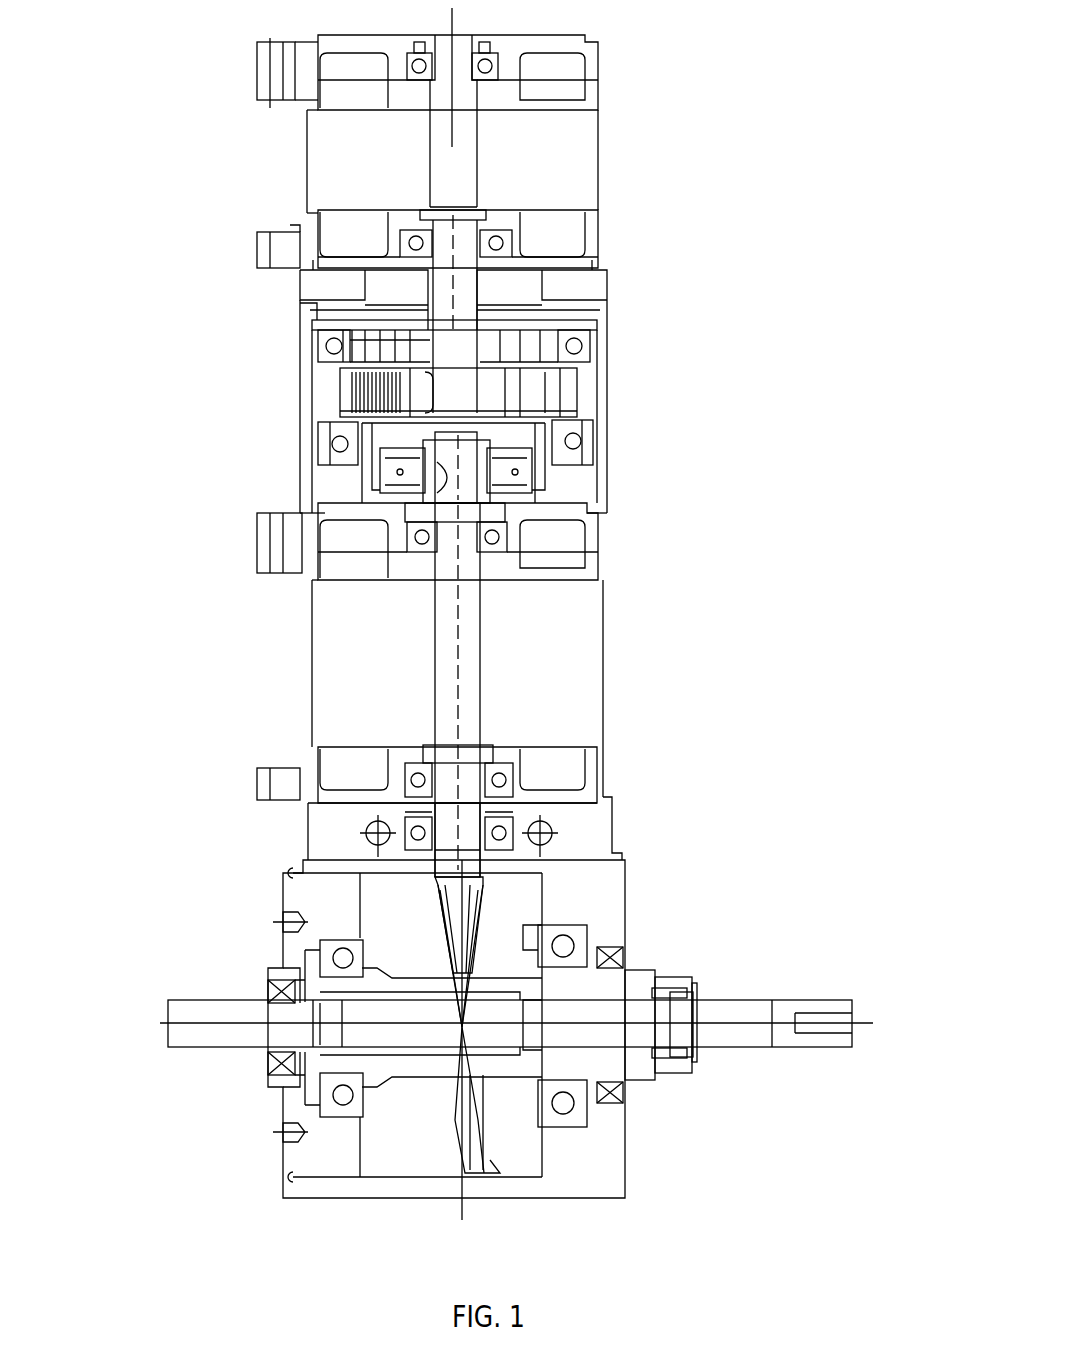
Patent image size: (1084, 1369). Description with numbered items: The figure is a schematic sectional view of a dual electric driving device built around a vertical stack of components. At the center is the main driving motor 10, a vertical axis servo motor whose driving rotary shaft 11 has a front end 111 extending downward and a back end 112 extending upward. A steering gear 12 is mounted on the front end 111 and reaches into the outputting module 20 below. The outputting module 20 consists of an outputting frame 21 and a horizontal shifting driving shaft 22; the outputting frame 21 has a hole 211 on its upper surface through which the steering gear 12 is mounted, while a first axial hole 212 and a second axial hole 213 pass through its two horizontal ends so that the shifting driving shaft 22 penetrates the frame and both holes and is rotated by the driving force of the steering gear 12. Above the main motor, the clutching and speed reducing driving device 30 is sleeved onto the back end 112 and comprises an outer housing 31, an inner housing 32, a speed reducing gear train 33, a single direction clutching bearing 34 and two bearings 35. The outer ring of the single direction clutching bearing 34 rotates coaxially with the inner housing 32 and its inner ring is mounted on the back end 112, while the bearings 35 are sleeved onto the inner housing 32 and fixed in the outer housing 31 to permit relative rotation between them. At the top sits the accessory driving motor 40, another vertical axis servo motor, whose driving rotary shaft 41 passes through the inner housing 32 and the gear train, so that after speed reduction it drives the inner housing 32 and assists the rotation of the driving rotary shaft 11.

The main driving motor 10 is at (608, 665).
The driving rotary shaft 11 is at (465, 665).
The front end 111 is at (470, 823).
The back end 112 is at (467, 438).
The steering gear 12 is at (452, 905).
The outputting module 20 is at (658, 965).
The outputting frame 21 is at (607, 905).
The hole 211 is at (437, 870).
The first axial hole 212 is at (303, 1053).
The second axial hole 213 is at (675, 988).
The shifting driving shaft 22 is at (568, 1035).
The clutching and speed reducing driving device 30 is at (476, 399).
The outer housing 31 is at (300, 387).
The inner housing 32 is at (372, 435).
The speed reducing gear train 33 is at (487, 383).
The single direction clutching bearing 34 is at (407, 480).
The bearing 35 is at (590, 347).
The accessory driving motor 40 is at (610, 142).
The driving rotary shaft 41 is at (467, 283).